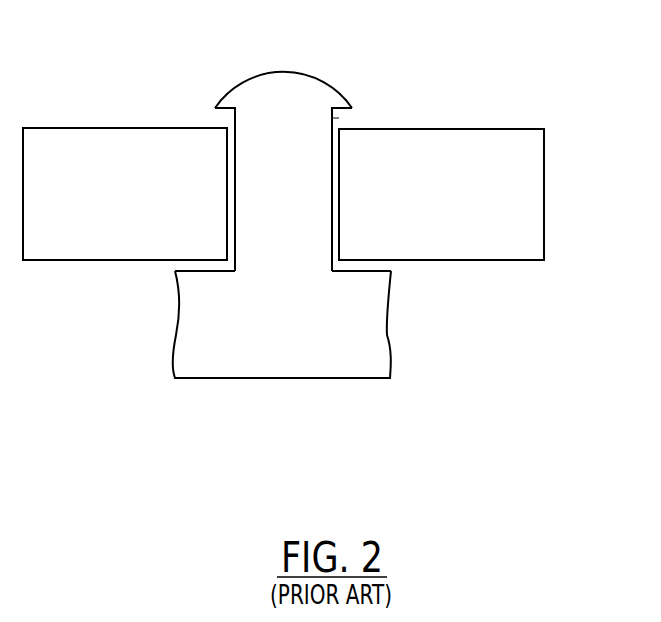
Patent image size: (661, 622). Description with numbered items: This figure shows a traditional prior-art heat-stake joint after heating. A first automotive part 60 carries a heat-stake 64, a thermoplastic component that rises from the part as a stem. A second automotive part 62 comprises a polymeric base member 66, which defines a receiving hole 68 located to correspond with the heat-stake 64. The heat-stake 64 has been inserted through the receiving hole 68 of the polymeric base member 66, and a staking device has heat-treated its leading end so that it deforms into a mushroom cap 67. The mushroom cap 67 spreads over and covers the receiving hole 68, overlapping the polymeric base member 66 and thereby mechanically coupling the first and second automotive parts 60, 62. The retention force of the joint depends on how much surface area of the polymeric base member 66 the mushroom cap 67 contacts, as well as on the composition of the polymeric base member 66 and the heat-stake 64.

The first automotive part 60 is at (276, 410).
The second automotive part 62 is at (334, 194).
The heat-stake 64 is at (273, 266).
The polymeric base member 66 is at (432, 205).
The mushroom cap 67 is at (283, 78).
The receiving hole 68 is at (338, 126).